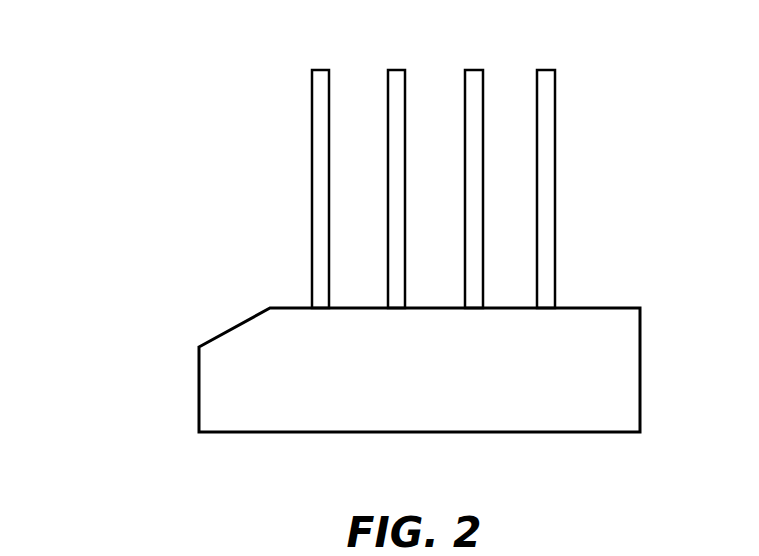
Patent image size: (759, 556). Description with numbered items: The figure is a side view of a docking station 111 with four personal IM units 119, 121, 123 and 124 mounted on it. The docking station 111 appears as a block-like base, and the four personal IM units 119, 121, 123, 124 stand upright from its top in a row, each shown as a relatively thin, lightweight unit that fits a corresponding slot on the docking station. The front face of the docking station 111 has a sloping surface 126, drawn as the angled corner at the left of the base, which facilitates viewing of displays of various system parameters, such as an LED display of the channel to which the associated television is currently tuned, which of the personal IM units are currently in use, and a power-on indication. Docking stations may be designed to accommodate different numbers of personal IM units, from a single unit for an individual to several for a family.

The docking station 111 is at (642, 340).
The personal IM unit 119 is at (312, 127).
The personal IM unit 121 is at (388, 70).
The personal IM unit 123 is at (483, 70).
The personal IM unit 124 is at (555, 125).
The sloping surface 126 is at (198, 296).